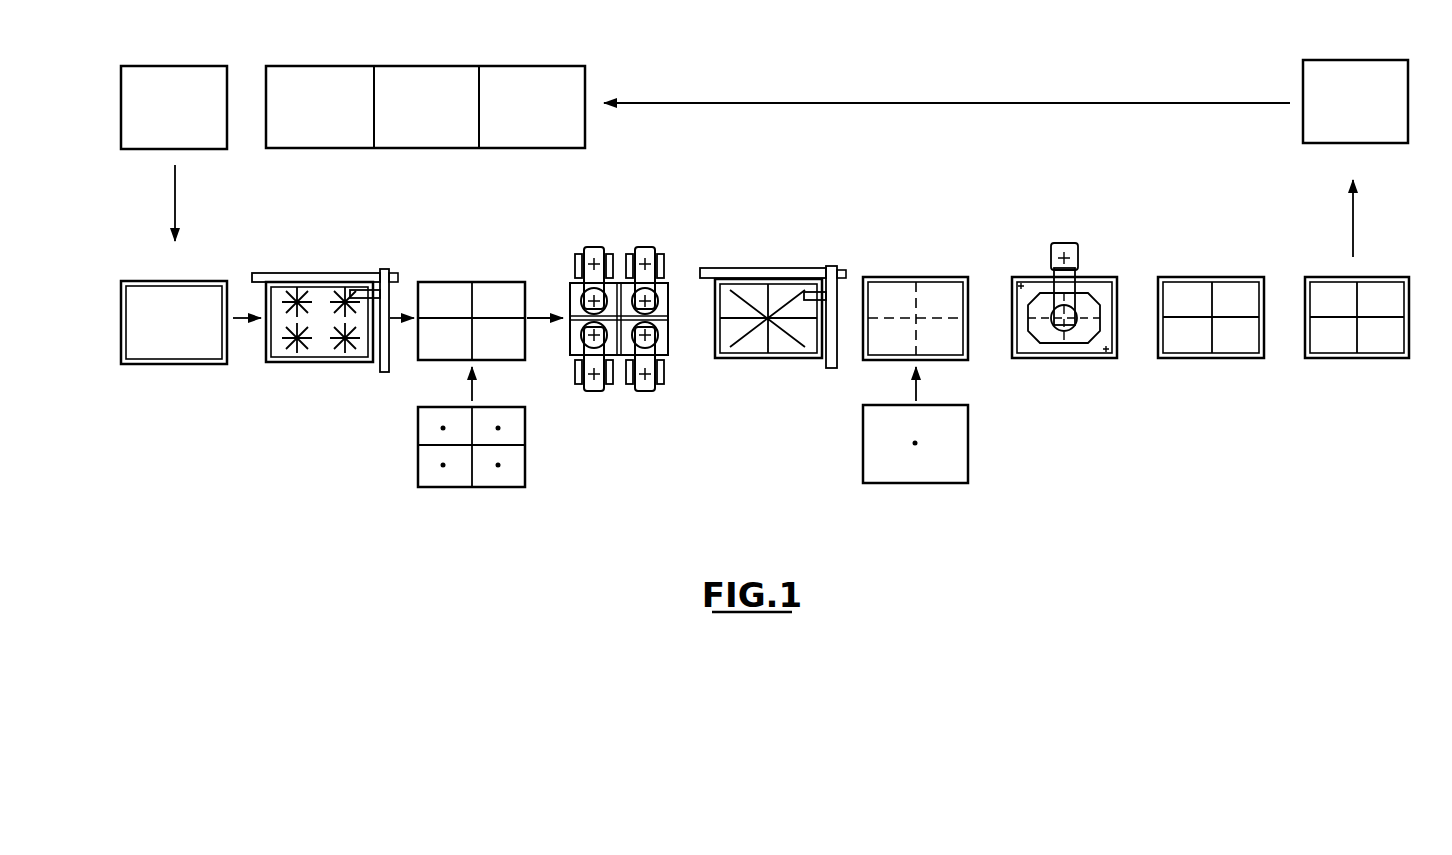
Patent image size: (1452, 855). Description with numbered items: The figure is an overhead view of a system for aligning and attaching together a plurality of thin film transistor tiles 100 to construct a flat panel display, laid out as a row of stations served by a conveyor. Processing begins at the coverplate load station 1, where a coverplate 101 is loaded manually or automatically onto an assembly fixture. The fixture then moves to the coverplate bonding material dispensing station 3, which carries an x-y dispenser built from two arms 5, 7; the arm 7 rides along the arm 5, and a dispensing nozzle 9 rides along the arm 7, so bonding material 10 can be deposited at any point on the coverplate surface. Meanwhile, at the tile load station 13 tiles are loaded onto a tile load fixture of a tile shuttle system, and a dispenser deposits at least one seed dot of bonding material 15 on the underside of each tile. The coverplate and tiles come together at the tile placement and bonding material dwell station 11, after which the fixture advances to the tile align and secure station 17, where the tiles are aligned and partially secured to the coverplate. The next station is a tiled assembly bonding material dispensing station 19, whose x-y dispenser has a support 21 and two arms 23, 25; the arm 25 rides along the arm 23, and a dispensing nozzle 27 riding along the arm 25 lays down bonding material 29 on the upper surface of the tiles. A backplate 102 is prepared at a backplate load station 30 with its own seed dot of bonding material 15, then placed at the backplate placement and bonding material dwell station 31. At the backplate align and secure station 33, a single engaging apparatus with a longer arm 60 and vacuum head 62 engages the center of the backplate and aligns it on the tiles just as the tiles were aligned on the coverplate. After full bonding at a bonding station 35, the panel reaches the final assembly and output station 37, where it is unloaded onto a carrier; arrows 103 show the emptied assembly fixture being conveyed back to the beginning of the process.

The coverplate load station 1 is at (152, 278).
The coverplate bonding material dispensing station 3 is at (307, 320).
The arm 5 is at (340, 273).
The arm 7 is at (382, 374).
The dispensing nozzle 9 is at (356, 290).
The marks 10 is at (297, 352).
The tile placement and bonding material dwell station 11 is at (473, 272).
The tile load station 13 is at (631, 475).
The bonding material 15 is at (443, 428).
The tile align and secure station 17 is at (584, 237).
The cutting station 19 is at (756, 294).
The top plate 21 is at (725, 268).
The arm 23 is at (803, 268).
The arm 25 is at (829, 369).
The dispensing nozzle 27 is at (806, 292).
The cut lines 29 is at (742, 342).
The pattern sheet 30 is at (875, 467).
The backplate placement and bonding material dwell station 31 is at (921, 267).
The backplate align and secure station 33 is at (1041, 293).
The inspection station 35 is at (1211, 267).
The final assembly and output station 37 is at (1329, 267).
The arm 60 is at (1058, 295).
The press head 62 is at (1066, 345).
The thin film transistor tile 100 is at (503, 488).
The coverplate 101 is at (330, 352).
The backplate 102 is at (863, 440).
The arrows 103 is at (920, 103).